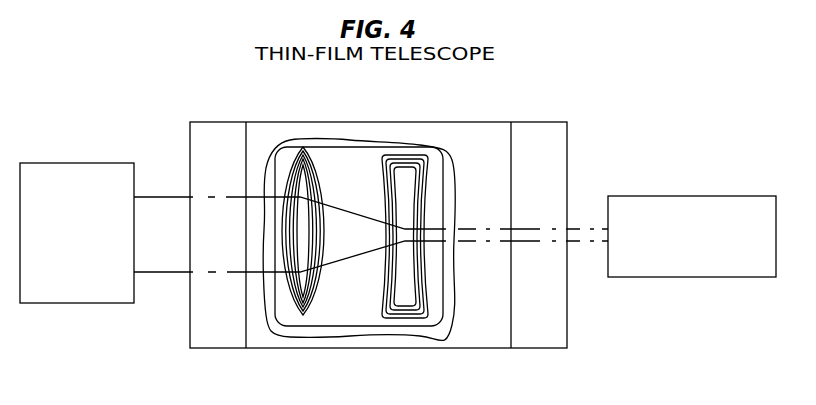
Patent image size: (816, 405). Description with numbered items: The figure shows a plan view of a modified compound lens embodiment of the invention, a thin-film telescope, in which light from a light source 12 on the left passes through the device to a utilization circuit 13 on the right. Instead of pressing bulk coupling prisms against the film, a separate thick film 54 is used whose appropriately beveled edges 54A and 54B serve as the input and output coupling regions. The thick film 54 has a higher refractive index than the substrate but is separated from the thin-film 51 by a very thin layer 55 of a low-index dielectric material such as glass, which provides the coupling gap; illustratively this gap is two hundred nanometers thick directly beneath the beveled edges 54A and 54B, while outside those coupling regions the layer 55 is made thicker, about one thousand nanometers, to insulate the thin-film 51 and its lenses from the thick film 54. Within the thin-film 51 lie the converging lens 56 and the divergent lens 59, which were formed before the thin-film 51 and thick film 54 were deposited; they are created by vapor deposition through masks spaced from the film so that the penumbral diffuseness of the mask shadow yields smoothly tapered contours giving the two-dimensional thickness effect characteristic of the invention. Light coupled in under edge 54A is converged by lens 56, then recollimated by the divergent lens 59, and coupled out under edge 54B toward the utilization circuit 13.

The light source 12 is at (77, 163).
The utilization circuit 13 is at (672, 196).
The thin-film 51 is at (364, 137).
The thick film 54 is at (259, 130).
The beveled edge 54A is at (207, 122).
The beveled edge 54B is at (538, 131).
The low-index dielectric layer 55 is at (322, 333).
The converging lens 56 is at (313, 140).
The divergent lens 59 is at (410, 172).